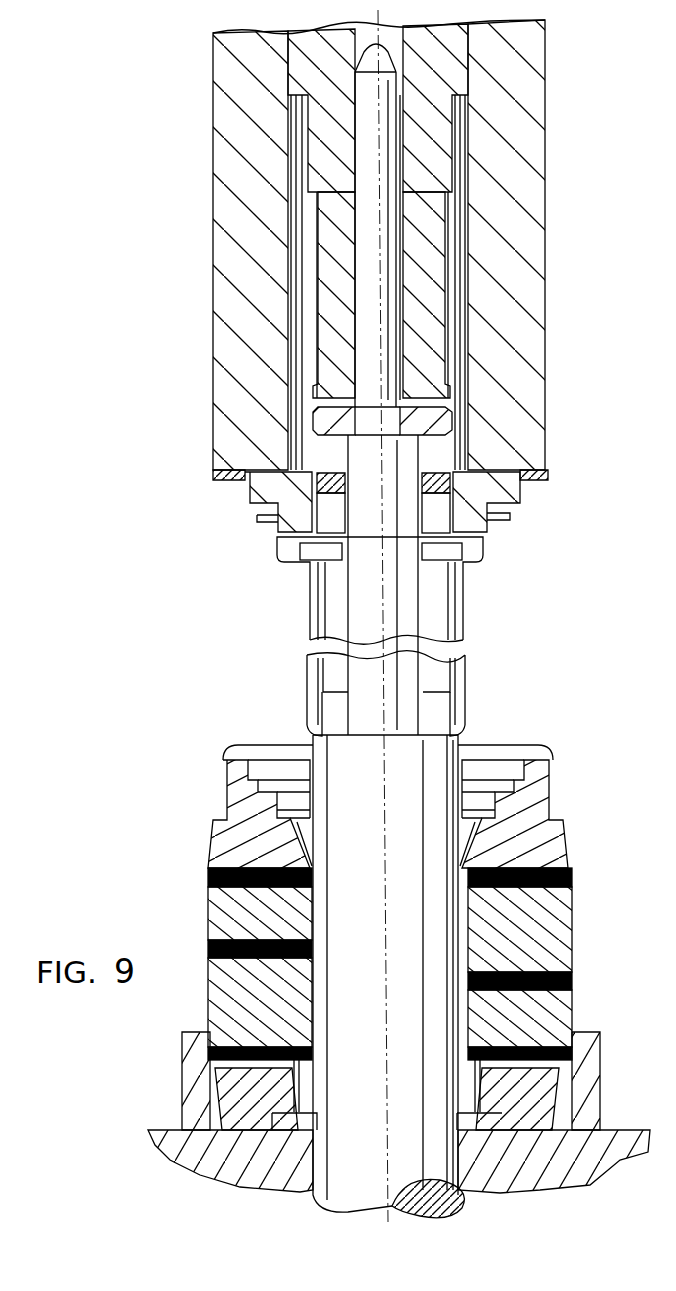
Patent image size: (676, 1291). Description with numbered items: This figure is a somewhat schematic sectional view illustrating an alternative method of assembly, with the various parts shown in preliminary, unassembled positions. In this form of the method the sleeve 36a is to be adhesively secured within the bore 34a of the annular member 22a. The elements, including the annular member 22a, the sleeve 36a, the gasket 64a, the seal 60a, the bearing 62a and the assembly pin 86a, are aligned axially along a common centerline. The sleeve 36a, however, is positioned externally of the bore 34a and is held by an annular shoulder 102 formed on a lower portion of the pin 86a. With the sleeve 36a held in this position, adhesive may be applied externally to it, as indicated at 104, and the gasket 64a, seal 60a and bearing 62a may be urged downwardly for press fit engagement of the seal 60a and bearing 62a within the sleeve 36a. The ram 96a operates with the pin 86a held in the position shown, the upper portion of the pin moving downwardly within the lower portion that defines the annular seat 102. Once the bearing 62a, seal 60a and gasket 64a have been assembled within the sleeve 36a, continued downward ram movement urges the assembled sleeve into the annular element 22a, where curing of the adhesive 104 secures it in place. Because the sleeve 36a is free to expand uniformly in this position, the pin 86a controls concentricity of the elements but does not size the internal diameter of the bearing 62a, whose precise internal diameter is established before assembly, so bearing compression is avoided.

The ram 96a is at (462, 56).
The assembly pin 86a is at (397, 162).
The bearing 62a is at (441, 270).
The seal 60a is at (450, 413).
The gasket 64a is at (452, 486).
The sleeve 36a is at (463, 612).
The adhesive 104 is at (465, 666).
The annular shoulder 102 is at (459, 756).
The bore 34a is at (456, 952).
The annular member 22a is at (583, 984).